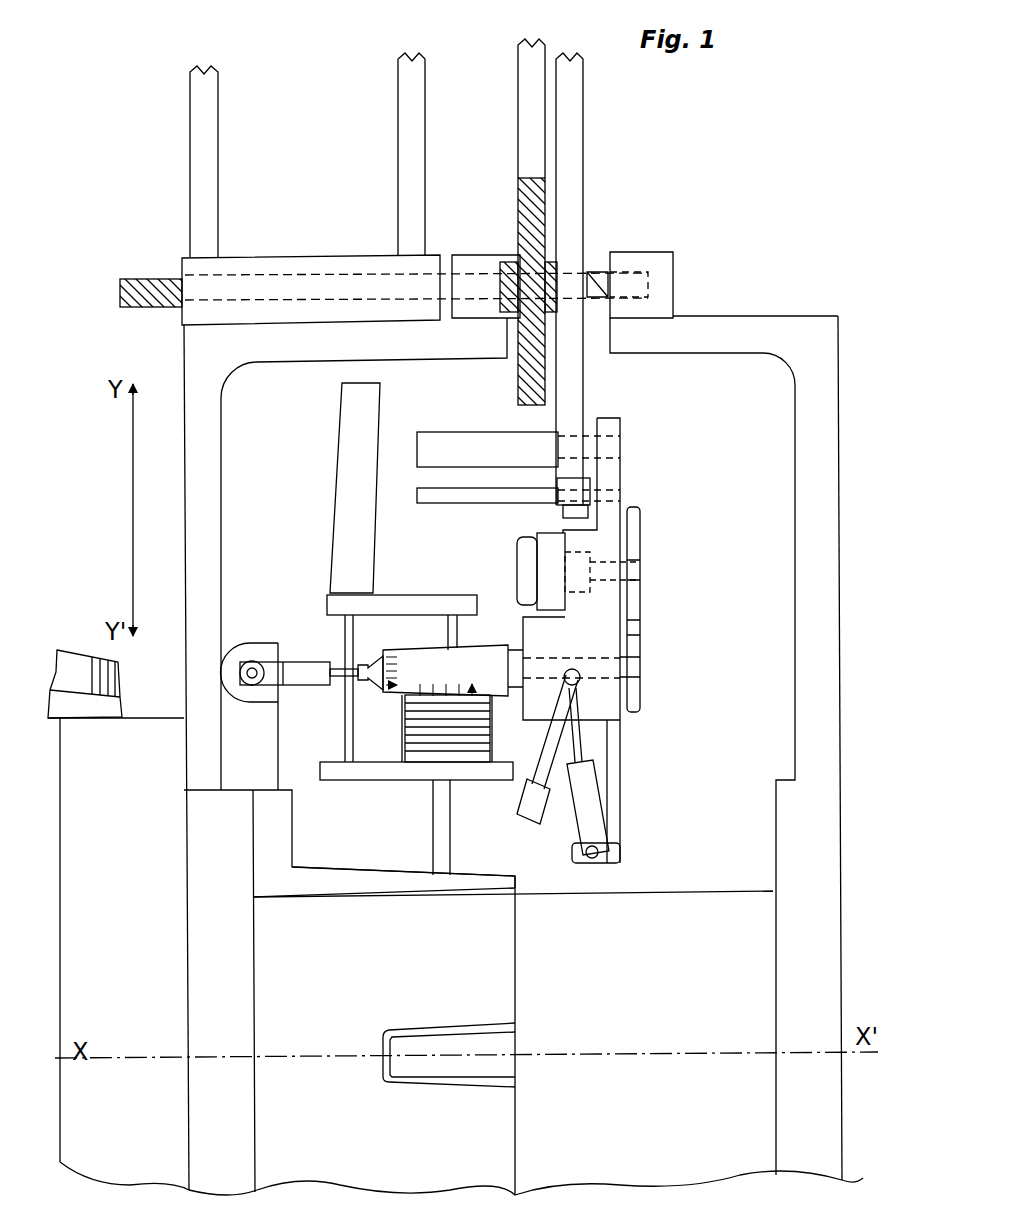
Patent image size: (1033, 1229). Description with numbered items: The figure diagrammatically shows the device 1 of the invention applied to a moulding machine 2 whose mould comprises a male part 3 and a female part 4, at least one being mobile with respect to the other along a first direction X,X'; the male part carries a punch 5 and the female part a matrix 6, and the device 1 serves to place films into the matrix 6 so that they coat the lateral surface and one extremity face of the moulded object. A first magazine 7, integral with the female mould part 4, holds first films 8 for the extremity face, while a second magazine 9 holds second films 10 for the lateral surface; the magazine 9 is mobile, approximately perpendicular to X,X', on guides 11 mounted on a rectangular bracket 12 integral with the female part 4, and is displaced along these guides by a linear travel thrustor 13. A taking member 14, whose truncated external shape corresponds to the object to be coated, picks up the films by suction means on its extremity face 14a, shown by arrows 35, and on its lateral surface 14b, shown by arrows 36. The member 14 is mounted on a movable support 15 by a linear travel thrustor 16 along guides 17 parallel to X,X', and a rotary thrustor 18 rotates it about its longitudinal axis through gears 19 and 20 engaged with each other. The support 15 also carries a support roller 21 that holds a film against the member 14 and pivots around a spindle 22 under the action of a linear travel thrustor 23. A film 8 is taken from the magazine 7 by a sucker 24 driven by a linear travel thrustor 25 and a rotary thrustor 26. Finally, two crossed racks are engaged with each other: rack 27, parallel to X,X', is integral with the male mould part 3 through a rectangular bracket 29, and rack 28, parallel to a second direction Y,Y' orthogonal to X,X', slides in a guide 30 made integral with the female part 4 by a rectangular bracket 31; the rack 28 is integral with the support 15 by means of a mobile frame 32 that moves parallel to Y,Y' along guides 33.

The device 1 is at (728, 264).
The moulding machine 2 is at (719, 830).
The male mould part 3 is at (663, 1125).
The female mould part 4 is at (324, 1139).
The punch 5 is at (452, 1070).
The matrix 6 is at (386, 1066).
The first magazine 7 is at (75, 660).
The first films 8 is at (118, 664).
The second magazine 9 is at (409, 768).
The second films 10 is at (420, 715).
The guides 11 is at (450, 840).
The rectangular bracket 12 is at (371, 878).
The linear travel thrustor 13 is at (336, 508).
The taking member 14 is at (485, 632).
The extremity face 14a is at (383, 693).
The lateral surface 14b is at (502, 698).
The movable support 15 is at (622, 502).
The linear travel thrustor 16 is at (474, 438).
The guides 17 is at (510, 496).
The rotary thrustor 18 is at (545, 565).
The gear 19 is at (635, 549).
The gear 20 is at (640, 691).
The support roller 21 is at (532, 812).
The spindle 22 is at (560, 740).
The linear travel thrustor 23 is at (590, 808).
The sucker 24 is at (383, 660).
The linear travel thrustor 25 is at (302, 664).
The rotary thrustor 26 is at (250, 643).
The rack 27 is at (152, 282).
The rack 28 is at (527, 192).
The rectangular bracket 29 is at (827, 453).
The guide 30 is at (347, 260).
The rectangular bracket 31 is at (210, 474).
The mobile frame 32 is at (576, 152).
The guides 33 is at (403, 152).
The arrows 35 is at (400, 668).
The arrows 36 is at (468, 677).